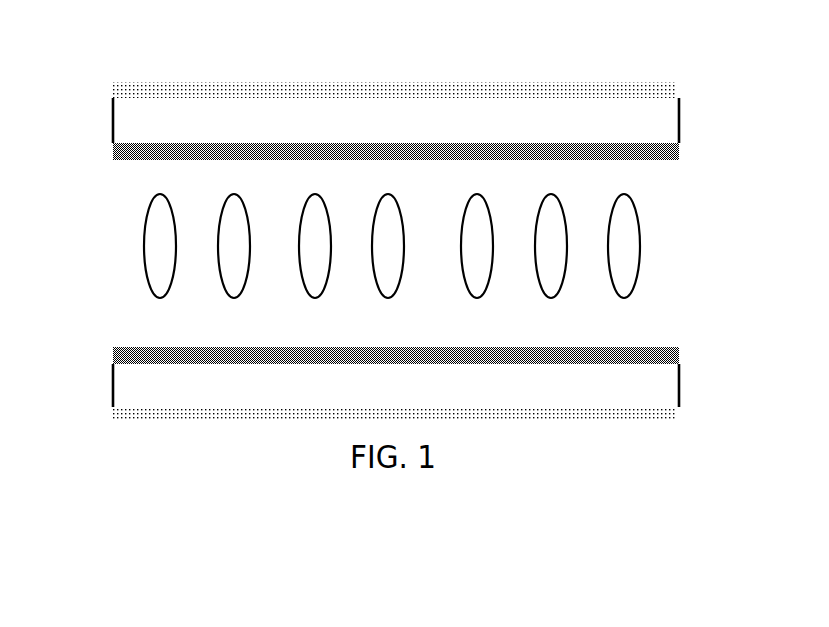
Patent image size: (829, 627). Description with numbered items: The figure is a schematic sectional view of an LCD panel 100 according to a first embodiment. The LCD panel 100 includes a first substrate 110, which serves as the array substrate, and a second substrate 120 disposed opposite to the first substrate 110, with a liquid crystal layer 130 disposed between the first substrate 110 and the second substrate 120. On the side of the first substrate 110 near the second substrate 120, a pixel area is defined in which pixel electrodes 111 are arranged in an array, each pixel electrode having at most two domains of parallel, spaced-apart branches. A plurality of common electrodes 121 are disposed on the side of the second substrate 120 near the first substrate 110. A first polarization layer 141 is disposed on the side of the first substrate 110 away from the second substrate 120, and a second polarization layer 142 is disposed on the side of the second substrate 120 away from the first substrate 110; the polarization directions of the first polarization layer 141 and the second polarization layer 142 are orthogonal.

The LCD panel 100 is at (438, 37).
The first substrate 110 is at (679, 110).
The pixel electrodes 111 is at (677, 158).
The second substrate 120 is at (679, 385).
The common electrodes 121 is at (113, 347).
The liquid crystal layer 130 is at (634, 238).
The first polarization layer 141 is at (113, 83).
The second polarization layer 142 is at (112, 417).